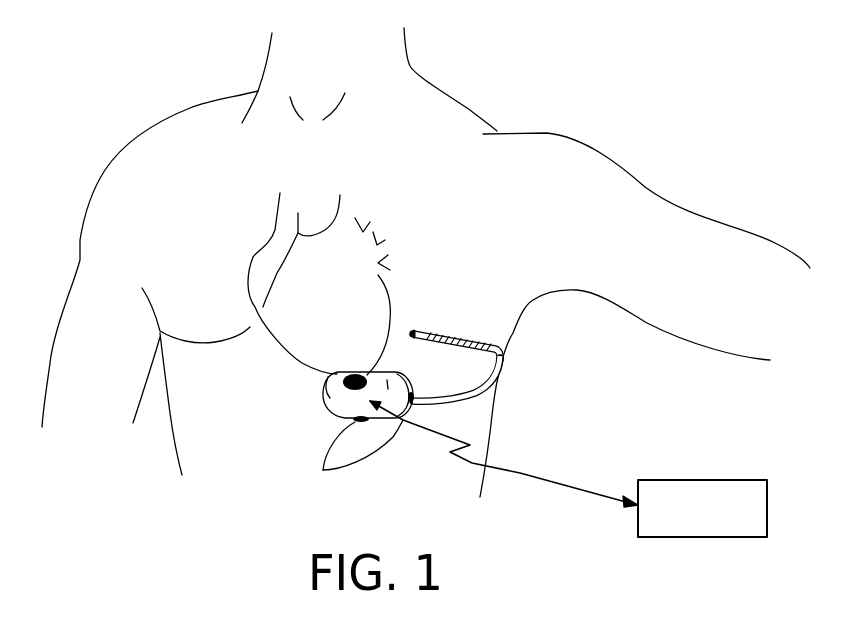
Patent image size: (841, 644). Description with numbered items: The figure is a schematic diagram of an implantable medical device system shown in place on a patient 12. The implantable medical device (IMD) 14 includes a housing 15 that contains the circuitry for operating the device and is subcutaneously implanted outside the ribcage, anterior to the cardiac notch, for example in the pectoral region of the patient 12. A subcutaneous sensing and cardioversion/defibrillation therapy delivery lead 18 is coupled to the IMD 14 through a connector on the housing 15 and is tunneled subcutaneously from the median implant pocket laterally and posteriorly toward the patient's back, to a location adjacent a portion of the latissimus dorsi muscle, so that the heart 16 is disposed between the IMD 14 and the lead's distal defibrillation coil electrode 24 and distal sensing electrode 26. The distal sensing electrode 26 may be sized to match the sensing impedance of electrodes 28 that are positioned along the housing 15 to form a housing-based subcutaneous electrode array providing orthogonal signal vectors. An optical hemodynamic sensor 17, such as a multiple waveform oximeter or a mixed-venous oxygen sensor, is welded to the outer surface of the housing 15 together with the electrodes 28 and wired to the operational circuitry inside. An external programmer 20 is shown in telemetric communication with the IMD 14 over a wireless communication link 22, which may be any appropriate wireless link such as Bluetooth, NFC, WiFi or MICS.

The patient 12 is at (547, 133).
The implantable medical device 14 is at (337, 400).
The housing 15 is at (387, 382).
The heart 16 is at (333, 280).
The optical hemodynamic sensor 17 is at (355, 377).
The subcutaneous sensing and cardioversion/defibrillation therapy delivery lead 18 is at (477, 390).
The programmer 20 is at (700, 537).
The wireless communication link 22 is at (472, 463).
The distal defibrillation coil electrode 24 is at (483, 359).
The distal sensing electrode 26 is at (415, 330).
The electrodes 28 is at (323, 377).